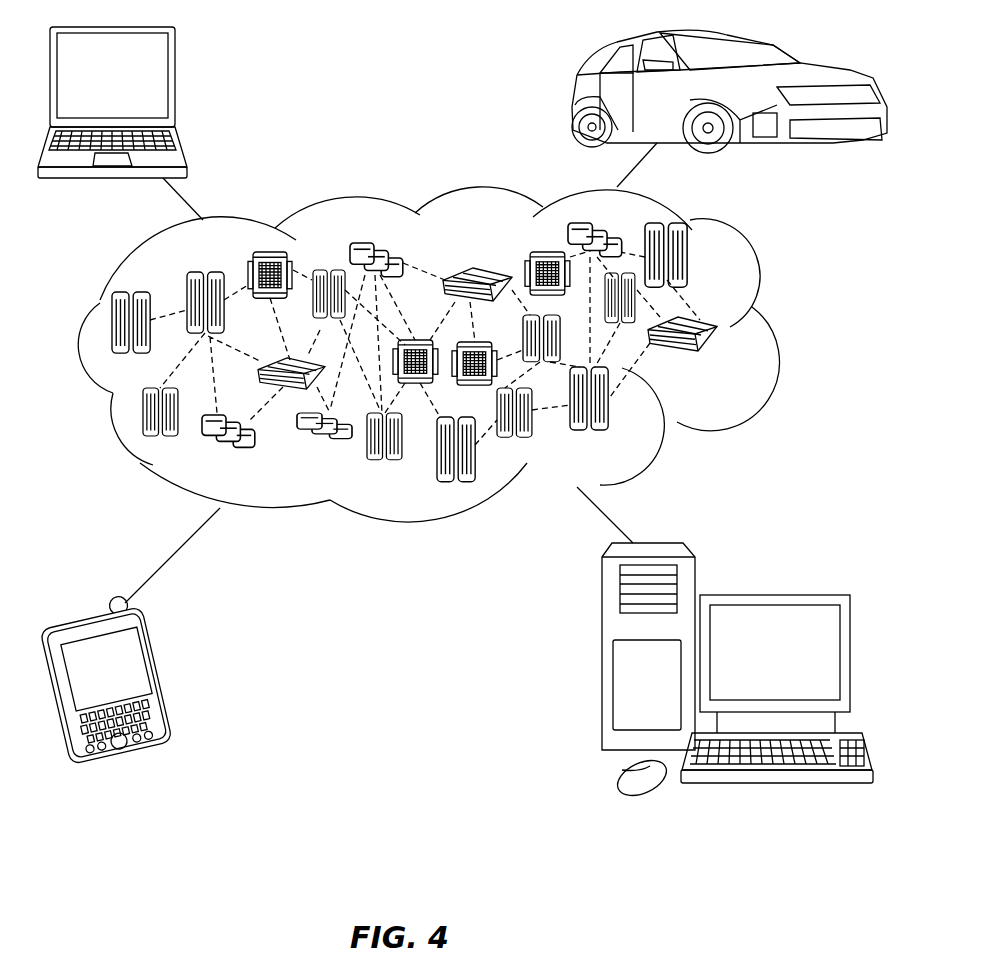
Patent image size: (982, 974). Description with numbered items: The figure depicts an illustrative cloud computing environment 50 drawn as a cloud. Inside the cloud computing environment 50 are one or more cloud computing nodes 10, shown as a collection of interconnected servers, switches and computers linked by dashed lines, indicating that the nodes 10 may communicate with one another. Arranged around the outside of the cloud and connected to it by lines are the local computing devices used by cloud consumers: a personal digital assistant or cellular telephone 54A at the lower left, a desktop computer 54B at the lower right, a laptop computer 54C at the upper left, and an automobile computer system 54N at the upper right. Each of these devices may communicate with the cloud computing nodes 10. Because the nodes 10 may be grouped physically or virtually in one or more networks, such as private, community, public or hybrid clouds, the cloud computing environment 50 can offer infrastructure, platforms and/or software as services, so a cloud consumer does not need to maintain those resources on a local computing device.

The cloud computing environment 50 is at (773, 335).
The cloud computing nodes 10 is at (726, 364).
The personal digital assistant or cellular telephone 54A is at (165, 683).
The desktop computer 54B is at (770, 597).
The laptop computer 54C is at (175, 85).
The automobile computer system 54N is at (575, 97).